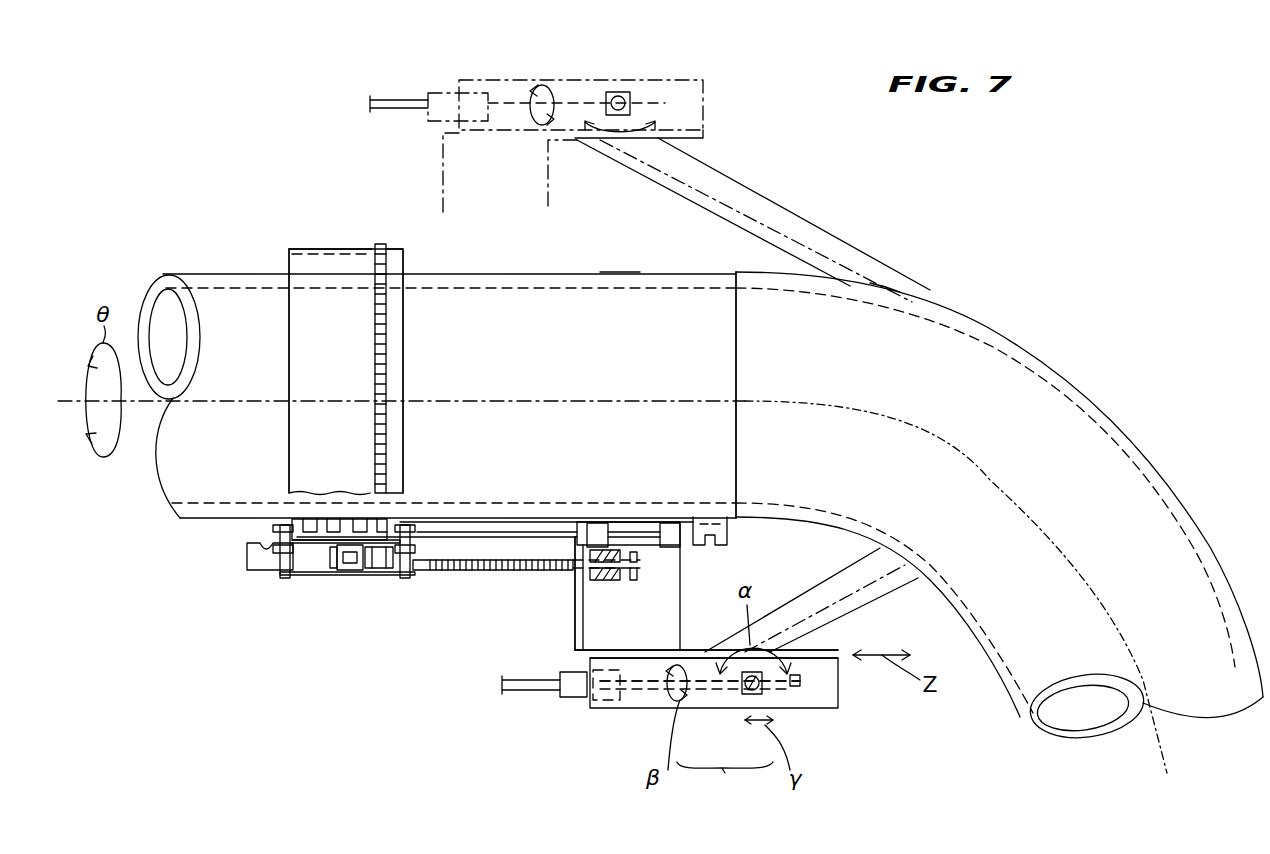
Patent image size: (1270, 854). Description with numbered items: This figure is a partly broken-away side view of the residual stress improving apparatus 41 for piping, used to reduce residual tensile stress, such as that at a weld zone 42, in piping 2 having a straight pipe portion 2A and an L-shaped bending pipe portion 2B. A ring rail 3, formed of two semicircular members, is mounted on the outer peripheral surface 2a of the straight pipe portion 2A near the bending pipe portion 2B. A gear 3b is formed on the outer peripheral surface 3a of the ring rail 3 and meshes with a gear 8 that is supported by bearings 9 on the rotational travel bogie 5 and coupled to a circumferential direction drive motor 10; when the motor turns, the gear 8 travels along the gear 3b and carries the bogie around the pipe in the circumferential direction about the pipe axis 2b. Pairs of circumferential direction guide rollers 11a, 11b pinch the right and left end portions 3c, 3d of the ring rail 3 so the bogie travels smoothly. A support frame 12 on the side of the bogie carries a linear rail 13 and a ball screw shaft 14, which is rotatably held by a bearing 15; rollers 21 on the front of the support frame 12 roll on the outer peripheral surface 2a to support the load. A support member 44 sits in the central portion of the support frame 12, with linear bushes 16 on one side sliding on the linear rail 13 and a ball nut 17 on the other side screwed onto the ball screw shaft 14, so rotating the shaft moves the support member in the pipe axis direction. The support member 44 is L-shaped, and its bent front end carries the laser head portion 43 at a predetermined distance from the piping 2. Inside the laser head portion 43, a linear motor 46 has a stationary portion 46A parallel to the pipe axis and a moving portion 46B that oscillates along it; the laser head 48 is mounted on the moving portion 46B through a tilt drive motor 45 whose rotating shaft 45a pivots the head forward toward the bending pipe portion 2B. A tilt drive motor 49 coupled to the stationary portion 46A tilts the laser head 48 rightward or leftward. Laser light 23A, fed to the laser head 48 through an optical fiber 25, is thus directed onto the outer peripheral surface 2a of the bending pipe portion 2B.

The piping 2 is at (573, 270).
The straight pipe portion 2A is at (514, 270).
The bending pipe portion 2B is at (992, 322).
The outer peripheral surface 2a is at (608, 272).
The pipe axis 2b is at (237, 400).
The ring rail 3 is at (405, 250).
The outer peripheral surface 3a is at (346, 255).
The gear 3b is at (389, 247).
The right end portion 3c is at (291, 262).
The left end portion 3d is at (405, 265).
The rotational travel bogie 5 is at (290, 578).
The gear 8 is at (356, 575).
The bearings 9 is at (332, 575).
The circumferential direction drive motor 10 is at (247, 557).
The circumferential direction guide rollers 11a is at (298, 565).
The circumferential direction guide rollers 11b is at (295, 517).
The support frame 12 is at (497, 575).
The linear rail 13 is at (523, 540).
The ball screw shaft 14 is at (590, 600).
The bearing 15 is at (622, 690).
The linear bushes 16 is at (613, 538).
The ball nut 17 is at (612, 630).
The rollers 21 is at (727, 527).
The laser light 23A is at (746, 215).
The optical fiber 25 is at (528, 690).
The residual stress improving apparatus 41 is at (488, 703).
The weld zone 42 is at (733, 318).
The laser head portion 43 is at (703, 115).
The support member 44 is at (443, 155).
The tilt drive motor 45 is at (765, 692).
The rotating shaft 45a is at (770, 692).
The linear motor 46 is at (725, 779).
The stationary portion 46A is at (727, 738).
The moving portion 46B is at (750, 738).
The laser head 48 is at (840, 682).
The tilt drive motor 49 is at (606, 700).